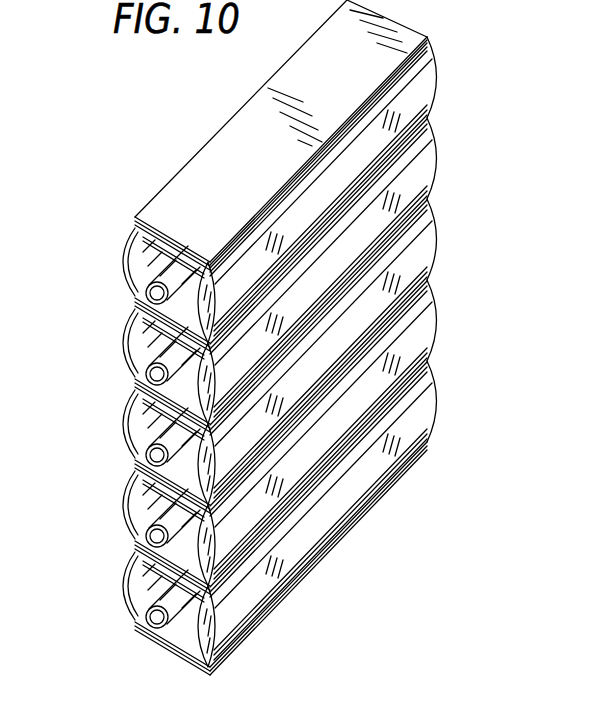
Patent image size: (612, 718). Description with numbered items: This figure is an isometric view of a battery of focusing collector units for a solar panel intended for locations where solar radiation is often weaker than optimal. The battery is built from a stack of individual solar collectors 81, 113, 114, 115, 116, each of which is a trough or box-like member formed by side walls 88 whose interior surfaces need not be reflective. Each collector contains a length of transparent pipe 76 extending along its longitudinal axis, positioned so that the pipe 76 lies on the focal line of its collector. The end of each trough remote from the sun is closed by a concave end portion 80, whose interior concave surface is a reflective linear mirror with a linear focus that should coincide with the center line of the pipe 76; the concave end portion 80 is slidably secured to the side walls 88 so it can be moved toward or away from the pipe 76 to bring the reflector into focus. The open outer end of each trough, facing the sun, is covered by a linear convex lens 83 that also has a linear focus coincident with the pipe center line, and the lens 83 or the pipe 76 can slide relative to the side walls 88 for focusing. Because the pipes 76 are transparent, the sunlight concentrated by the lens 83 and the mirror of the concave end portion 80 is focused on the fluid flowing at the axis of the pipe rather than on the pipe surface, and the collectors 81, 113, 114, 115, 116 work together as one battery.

The transparent pipe 76 is at (165, 353).
The concave end portion 80 is at (127, 257).
The solar collector 81 is at (208, 141).
The linear convex lens 83 is at (205, 447).
The side walls 88 is at (279, 164).
The solar collector 113 is at (437, 153).
The solar collector 114 is at (437, 222).
The solar collector 115 is at (438, 310).
The solar collector 116 is at (440, 395).